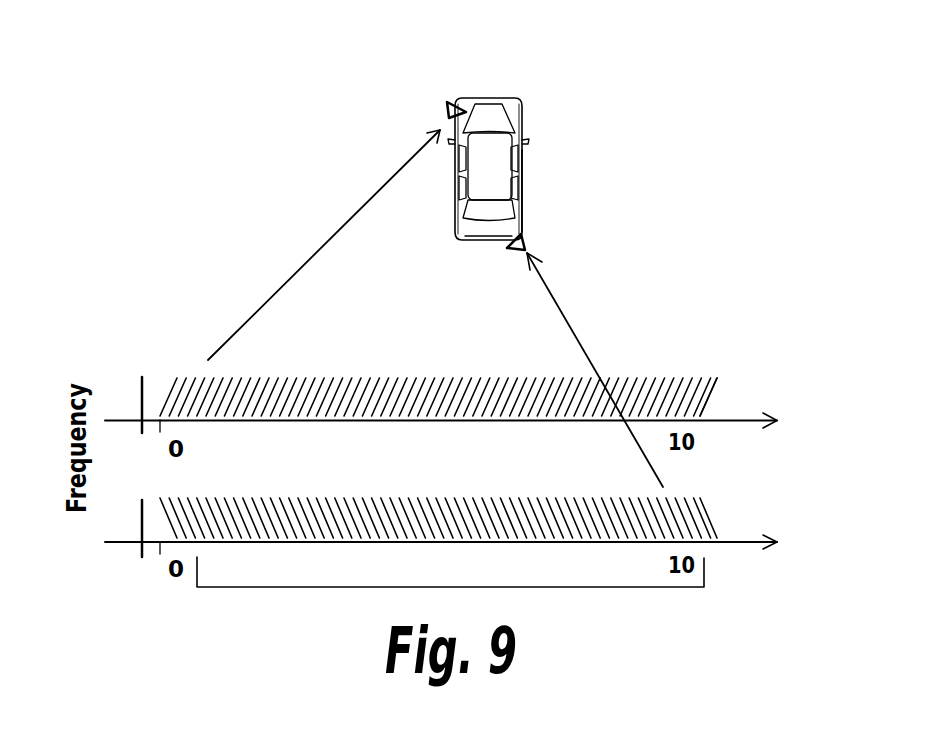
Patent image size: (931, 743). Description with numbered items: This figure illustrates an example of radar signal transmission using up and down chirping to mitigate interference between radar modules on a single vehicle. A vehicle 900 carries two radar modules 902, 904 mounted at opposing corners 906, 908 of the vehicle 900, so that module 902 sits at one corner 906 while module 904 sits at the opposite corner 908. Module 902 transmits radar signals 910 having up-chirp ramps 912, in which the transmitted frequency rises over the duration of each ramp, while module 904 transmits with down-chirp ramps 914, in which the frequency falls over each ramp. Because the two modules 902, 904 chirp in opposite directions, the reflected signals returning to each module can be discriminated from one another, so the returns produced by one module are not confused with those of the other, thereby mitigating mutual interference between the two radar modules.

The vehicle 900 is at (562, 117).
The module 902 is at (455, 98).
The module 904 is at (528, 242).
The corner 906 is at (498, 98).
The corner 908 is at (528, 198).
The radar signals 910 is at (357, 373).
The up-chirp ramps 912 is at (711, 393).
The down-chirp ramps 914 is at (708, 515).